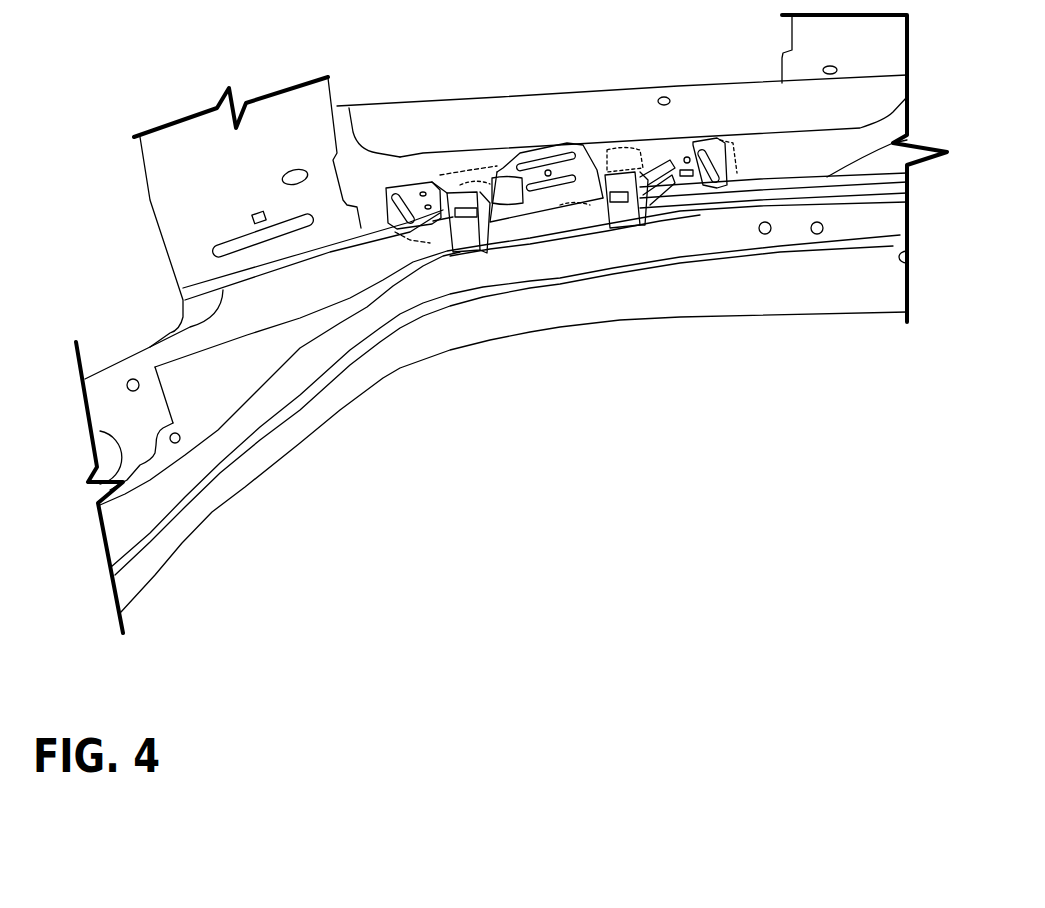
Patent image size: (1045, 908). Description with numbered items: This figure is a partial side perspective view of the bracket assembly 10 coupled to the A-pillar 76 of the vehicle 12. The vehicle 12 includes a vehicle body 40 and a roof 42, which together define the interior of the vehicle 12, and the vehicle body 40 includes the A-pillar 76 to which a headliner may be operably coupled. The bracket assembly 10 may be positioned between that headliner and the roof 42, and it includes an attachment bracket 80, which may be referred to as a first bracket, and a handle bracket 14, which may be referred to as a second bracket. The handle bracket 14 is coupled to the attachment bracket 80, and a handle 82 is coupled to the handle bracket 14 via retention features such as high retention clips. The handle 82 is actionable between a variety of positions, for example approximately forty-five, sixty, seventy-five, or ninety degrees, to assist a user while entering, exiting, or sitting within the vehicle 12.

The bracket assembly 10 is at (466, 160).
The vehicle 12 is at (100, 111).
The handle bracket 14 is at (522, 182).
The vehicle body 40 is at (800, 286).
The roof 42 is at (293, 133).
The A-pillar 76 is at (243, 423).
The attachment bracket 80 is at (500, 160).
The handle 82 is at (580, 226).